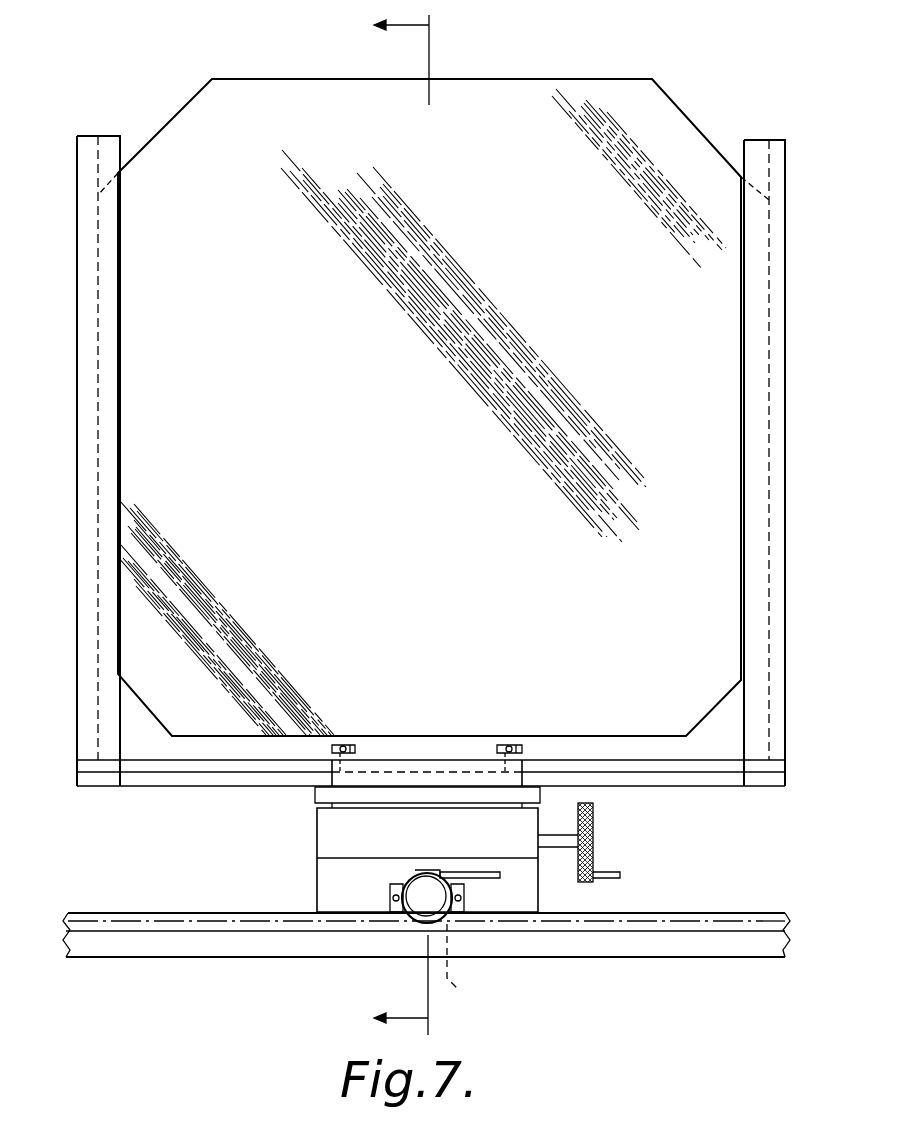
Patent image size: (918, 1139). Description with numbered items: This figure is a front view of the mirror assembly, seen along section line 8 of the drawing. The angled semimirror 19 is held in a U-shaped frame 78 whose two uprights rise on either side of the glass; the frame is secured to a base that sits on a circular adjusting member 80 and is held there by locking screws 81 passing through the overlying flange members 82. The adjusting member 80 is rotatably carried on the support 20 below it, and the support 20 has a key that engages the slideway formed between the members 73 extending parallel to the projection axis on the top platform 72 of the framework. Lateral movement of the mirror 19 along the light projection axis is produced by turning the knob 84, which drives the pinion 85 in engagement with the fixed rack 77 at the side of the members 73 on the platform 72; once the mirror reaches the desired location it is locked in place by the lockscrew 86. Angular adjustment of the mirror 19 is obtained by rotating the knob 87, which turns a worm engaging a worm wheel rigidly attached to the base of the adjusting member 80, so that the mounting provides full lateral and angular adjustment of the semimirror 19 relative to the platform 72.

The section line 8- 8 is at (388, 523).
The semimirror 19 is at (583, 95).
The support 20 is at (525, 896).
The top platform 72 is at (700, 945).
The members 73 is at (762, 928).
The rack 77 is at (735, 900).
The U-shaped frame 78 is at (775, 363).
The circular adjusting member 80 is at (322, 791).
The locking screws 81 is at (507, 745).
The flange members 82 is at (440, 768).
The knob 84 is at (412, 920).
The pinion 85 is at (469, 965).
The lockscrew 86 is at (474, 872).
The knob 87 is at (593, 825).